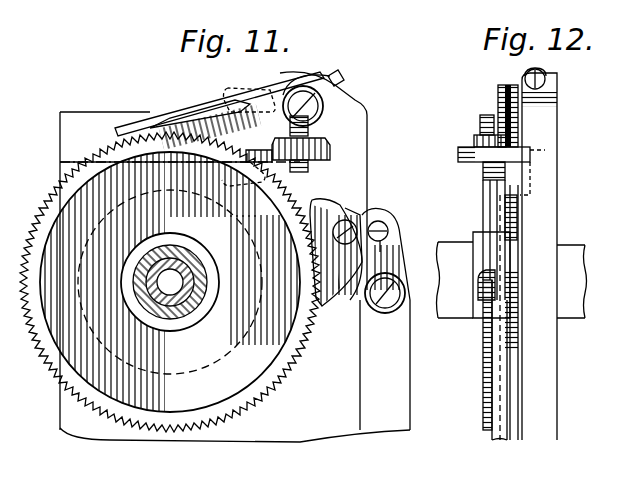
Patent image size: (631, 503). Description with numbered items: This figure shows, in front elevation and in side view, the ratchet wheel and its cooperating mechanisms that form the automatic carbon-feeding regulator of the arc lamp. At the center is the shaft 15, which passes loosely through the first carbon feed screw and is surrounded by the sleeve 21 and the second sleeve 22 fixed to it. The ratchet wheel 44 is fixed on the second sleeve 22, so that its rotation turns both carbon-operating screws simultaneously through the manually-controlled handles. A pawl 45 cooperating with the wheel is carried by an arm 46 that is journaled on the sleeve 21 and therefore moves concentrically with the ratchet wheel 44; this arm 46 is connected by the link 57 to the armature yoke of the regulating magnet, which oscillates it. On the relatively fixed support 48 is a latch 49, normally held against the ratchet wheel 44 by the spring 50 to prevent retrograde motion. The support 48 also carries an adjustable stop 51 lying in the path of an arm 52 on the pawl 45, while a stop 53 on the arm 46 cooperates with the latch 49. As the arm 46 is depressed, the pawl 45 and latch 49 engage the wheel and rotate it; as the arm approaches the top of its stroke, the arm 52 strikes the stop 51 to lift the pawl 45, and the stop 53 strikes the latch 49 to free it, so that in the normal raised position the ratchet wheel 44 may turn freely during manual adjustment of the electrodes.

In FIG. 11, the shaft 15 is at (172, 284).
In FIG. 11, the sleeve 21 is at (210, 293).
In FIG. 11, the second sleeve 22 is at (182, 270).
In FIG. 11, the ratchet wheel 44 is at (170, 282).
In FIG. 11, the pawl 45 is at (340, 268).
In FIG. 12, the pawl 45 is at (490, 255).
In FIG. 11, the arm 46 is at (398, 264).
In FIG. 12, the arm 46 is at (515, 292).
In FIG. 11, the support 48 is at (347, 142).
In FIG. 12, the support 48 is at (545, 132).
In FIG. 11, the latch 49 is at (219, 111).
In FIG. 12, the latch 49 is at (512, 103).
In FIG. 11, the spring 50 is at (242, 92).
In FIG. 12, the spring 50 is at (537, 76).
In FIG. 11, the adjustable stop 51 is at (310, 167).
In FIG. 12, the adjustable stop 51 is at (488, 124).
In FIG. 11, the arm 52 is at (322, 207).
In FIG. 12, the arm 52 is at (492, 203).
In FIG. 11, the stop 53 is at (252, 152).
In FIG. 12, the stop 53 is at (535, 156).
In FIG. 11, the link 57 is at (410, 373).
In FIG. 12, the link 57 is at (500, 390).